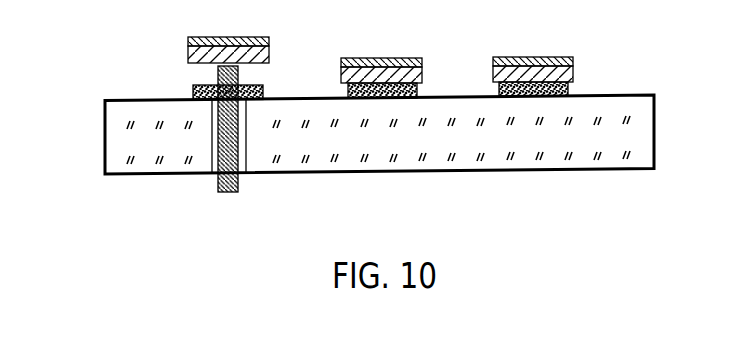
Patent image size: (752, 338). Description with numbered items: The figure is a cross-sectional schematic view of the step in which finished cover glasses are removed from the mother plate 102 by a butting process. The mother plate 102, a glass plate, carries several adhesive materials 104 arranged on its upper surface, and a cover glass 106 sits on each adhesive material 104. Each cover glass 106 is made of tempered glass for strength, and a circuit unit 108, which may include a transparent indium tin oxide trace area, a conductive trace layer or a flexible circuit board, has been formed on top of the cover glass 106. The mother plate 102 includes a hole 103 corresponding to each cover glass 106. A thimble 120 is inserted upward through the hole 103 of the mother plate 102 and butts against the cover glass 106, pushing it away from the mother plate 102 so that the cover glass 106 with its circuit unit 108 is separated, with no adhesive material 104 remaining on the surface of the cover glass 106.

The mother plate 102 is at (640, 131).
The hole 103 is at (215, 138).
The adhesive material 104 is at (568, 90).
The cover glass 106 is at (573, 64).
The circuit unit 108 is at (188, 44).
The thimble 120 is at (218, 68).